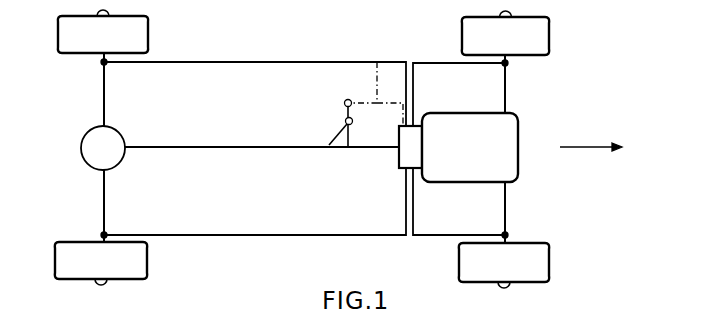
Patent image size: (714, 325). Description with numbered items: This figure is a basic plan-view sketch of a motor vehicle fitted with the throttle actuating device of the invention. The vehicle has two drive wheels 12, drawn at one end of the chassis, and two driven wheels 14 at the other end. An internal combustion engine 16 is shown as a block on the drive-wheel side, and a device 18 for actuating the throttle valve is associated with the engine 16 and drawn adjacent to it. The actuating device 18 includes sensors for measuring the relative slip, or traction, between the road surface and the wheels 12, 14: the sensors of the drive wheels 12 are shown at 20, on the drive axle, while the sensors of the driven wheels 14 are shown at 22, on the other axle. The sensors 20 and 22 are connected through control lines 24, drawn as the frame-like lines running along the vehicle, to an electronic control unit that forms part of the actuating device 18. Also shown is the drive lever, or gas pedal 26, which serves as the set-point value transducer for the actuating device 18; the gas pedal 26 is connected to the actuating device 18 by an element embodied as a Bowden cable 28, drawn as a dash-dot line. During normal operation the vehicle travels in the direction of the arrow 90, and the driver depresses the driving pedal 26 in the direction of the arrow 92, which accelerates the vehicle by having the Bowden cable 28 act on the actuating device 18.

The drive wheels 12 is at (540, 35).
The driven wheels 14 is at (137, 33).
The internal combustion engine 16 is at (470, 147).
The actuating device 18 is at (406, 158).
The sensors of the drive wheels 20 is at (508, 66).
The sensors of the driven wheels 22 is at (101, 63).
The control lines 24 is at (273, 62).
The gas pedal 26 is at (338, 100).
The Bowden cable 28 is at (376, 60).
The arrow 90 is at (588, 146).
The arrow 92 is at (330, 124).